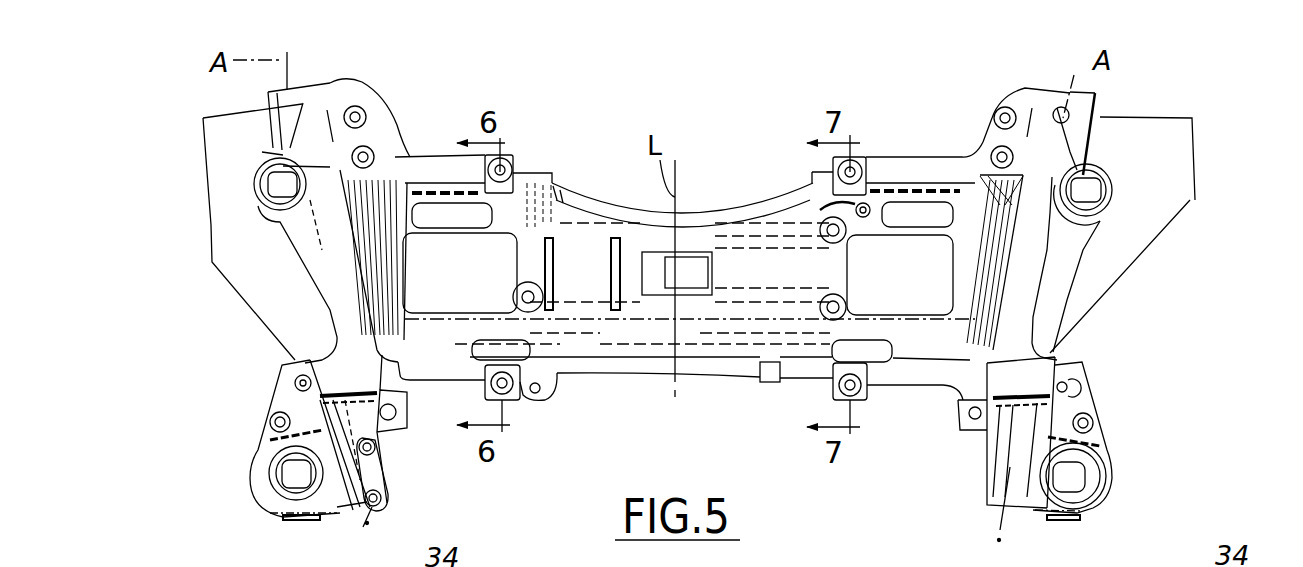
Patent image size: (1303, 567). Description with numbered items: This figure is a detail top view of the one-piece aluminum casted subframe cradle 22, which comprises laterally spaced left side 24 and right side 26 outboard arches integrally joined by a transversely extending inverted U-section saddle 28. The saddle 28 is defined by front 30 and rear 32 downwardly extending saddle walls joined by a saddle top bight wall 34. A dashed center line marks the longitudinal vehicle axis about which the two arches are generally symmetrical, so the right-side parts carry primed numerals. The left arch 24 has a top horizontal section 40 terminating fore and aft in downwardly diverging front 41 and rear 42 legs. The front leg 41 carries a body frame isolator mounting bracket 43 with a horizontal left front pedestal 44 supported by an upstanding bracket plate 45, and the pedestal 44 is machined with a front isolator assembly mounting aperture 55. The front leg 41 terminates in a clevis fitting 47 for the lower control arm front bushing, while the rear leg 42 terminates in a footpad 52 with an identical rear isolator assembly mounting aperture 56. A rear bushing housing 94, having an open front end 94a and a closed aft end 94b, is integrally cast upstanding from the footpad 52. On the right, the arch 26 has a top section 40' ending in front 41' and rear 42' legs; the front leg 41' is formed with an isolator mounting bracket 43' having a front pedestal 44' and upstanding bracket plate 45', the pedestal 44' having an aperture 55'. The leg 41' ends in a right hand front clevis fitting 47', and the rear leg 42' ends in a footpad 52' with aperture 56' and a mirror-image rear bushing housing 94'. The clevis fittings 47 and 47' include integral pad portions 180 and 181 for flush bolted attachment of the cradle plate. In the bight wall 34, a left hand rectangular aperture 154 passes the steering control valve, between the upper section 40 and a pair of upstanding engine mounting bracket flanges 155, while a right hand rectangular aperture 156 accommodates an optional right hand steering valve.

The subframe cradle 22 is at (880, 145).
The left side outboard arch 24 is at (327, 302).
The right side outboard arch 26 is at (1052, 299).
The saddle 28 is at (748, 204).
The front saddle wall 30 is at (568, 217).
The rear saddle wall 32 is at (590, 357).
The saddle top bight wall 34 is at (587, 250).
The top horizontal section 40 is at (314, 266).
The front leg 41 is at (389, 225).
The rear leg 42 is at (252, 218).
The body frame isolator mounting bracket 43 is at (210, 184).
The left front pedestal 44 is at (238, 168).
The upstanding bracket plate 45 is at (336, 99).
The clevis fitting 47 is at (304, 98).
The footpad 52 is at (298, 440).
The front isolator assembly mounting aperture 55 is at (222, 202).
The rear isolator assembly mounting aperture 56 is at (240, 473).
The rear bushing housing 94 is at (402, 469).
The open front end 94a is at (350, 400).
The closed aft end 94b is at (350, 513).
The left hand rectangular aperture 154 is at (430, 243).
The engine mounting bracket flanges 155 is at (608, 263).
The right hand rectangular aperture 156 is at (867, 240).
The integral pad portion 180 is at (357, 92).
The integral pad portion 181 is at (1027, 102).
The top section 40' is at (1084, 268).
The right front leg 41' is at (974, 234).
The right rear leg 42' is at (1122, 235).
The isolator mounting bracket 43' is at (1124, 182).
The front pedestal 44' is at (1114, 176).
The upstanding bracket plate 45' is at (1138, 123).
The right hand front clevis fitting 47' is at (1106, 117).
The footpad 52' is at (1104, 441).
The aperture 55' is at (1166, 195).
The aperture 56' is at (1112, 476).
The rear bushing housing 94' is at (982, 449).